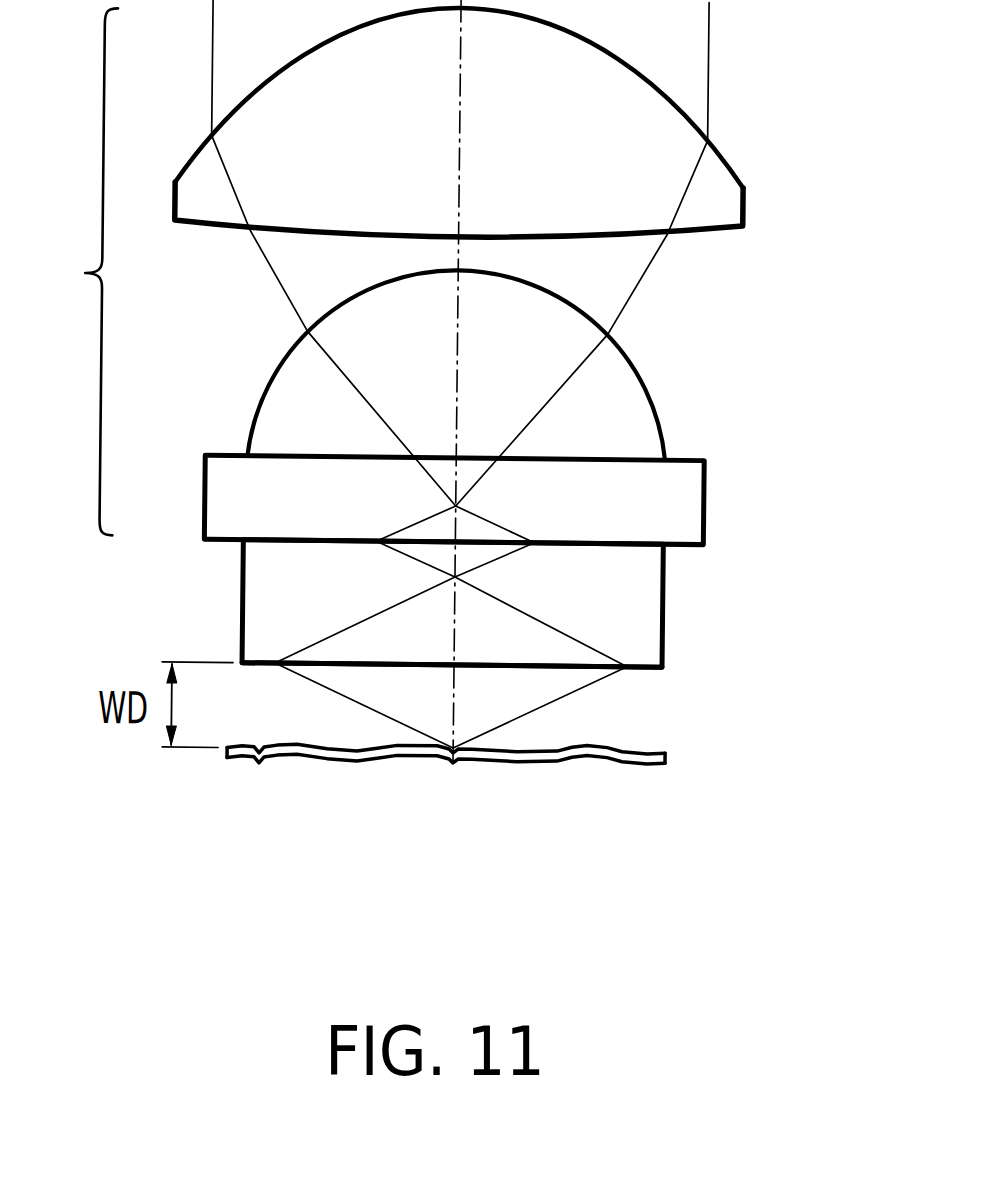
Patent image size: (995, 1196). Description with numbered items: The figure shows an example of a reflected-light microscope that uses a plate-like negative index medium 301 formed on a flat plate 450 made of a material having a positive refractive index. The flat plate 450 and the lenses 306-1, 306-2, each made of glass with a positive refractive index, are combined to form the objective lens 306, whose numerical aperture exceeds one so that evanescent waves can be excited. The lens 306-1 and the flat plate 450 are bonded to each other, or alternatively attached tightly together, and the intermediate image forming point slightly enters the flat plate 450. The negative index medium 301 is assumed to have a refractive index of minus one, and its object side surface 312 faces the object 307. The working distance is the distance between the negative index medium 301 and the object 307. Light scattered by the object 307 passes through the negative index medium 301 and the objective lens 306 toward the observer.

The objective lens 306 is at (457, 273).
The lens 306-1 is at (629, 413).
The lens 306-2 is at (722, 179).
The flat plate 450 is at (682, 496).
The negative index medium 301 is at (266, 579).
The object side surface 312 is at (650, 670).
The object 307 is at (669, 750).